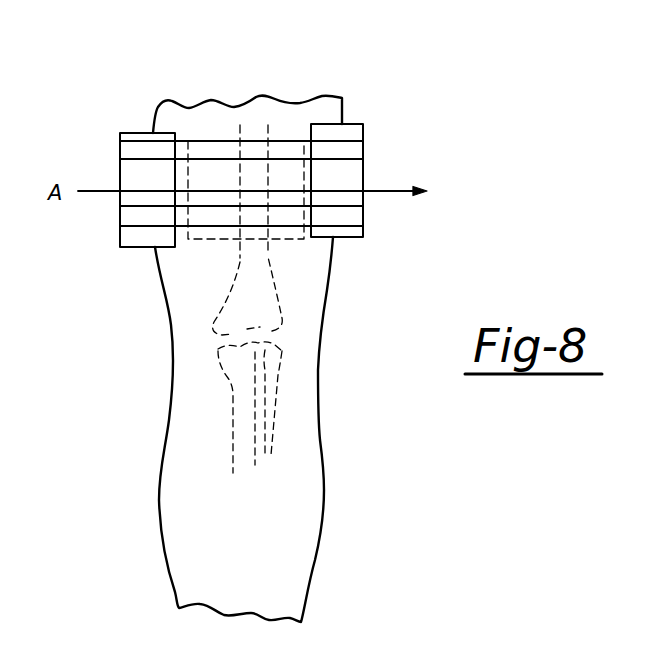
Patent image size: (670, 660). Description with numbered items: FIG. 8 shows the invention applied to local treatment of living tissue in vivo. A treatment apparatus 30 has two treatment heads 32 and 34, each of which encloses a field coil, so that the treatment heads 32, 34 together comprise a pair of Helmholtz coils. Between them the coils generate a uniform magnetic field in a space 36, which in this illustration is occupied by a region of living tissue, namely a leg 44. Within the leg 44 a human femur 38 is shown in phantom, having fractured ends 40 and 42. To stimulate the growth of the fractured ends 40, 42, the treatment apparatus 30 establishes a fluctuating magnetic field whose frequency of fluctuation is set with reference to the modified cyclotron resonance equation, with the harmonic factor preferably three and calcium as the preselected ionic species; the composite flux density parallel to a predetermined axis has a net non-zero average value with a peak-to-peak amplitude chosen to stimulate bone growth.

The treatment apparatus 30 is at (239, 135).
The treatment head 32 is at (364, 202).
The treatment head 34 is at (117, 180).
The space 36 is at (212, 197).
The human femur 38 is at (268, 263).
The fractured end 40 is at (265, 191).
The fractured end 42 is at (250, 172).
The leg 44 is at (321, 440).